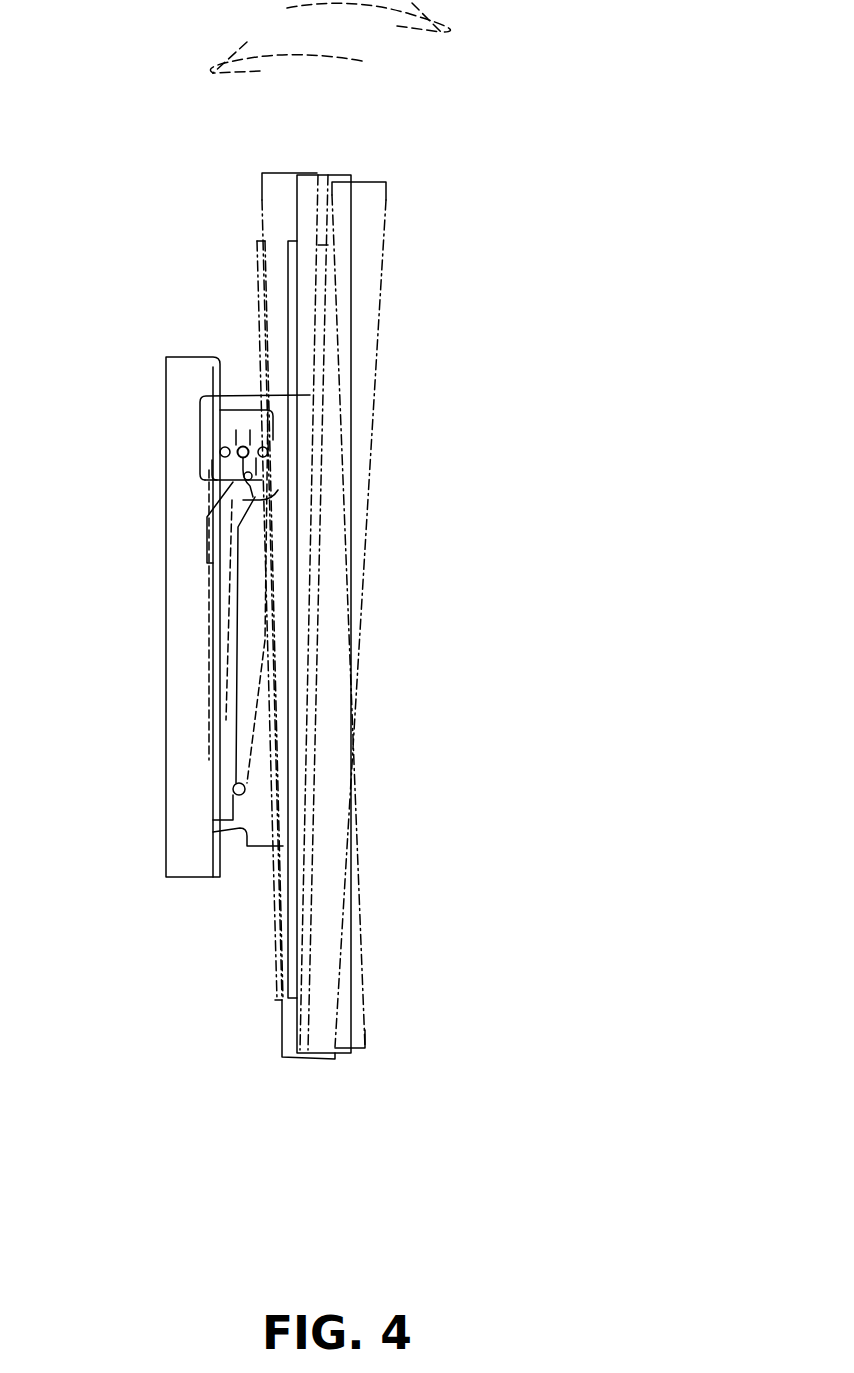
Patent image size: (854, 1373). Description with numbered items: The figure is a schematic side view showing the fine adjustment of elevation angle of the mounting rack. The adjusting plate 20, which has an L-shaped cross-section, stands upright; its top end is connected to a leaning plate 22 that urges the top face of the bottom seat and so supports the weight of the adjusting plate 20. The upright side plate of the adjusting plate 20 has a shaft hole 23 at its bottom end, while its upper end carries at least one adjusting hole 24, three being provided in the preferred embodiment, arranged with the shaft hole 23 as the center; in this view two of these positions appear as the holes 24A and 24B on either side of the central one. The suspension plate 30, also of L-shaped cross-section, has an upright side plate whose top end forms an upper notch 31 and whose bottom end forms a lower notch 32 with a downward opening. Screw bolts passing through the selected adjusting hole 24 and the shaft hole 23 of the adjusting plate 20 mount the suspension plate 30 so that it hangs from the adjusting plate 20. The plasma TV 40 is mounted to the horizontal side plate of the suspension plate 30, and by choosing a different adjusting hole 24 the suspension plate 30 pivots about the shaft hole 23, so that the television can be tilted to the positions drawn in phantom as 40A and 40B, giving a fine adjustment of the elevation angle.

The adjusting plate 20 is at (216, 570).
The leaning plate 22 is at (183, 357).
The shaft hole 23 is at (246, 789).
The adjusting hole 24 is at (247, 395).
The left pivot of hinge bracket 24A is at (220, 452).
The right pivot of hinge bracket 24B is at (268, 452).
The suspension plate 30 is at (265, 652).
The upper notch 31 is at (253, 497).
The lower notch 32 is at (243, 850).
The plasma TV 40 is at (324, 180).
The panel in first swung position 40A is at (262, 200).
The panel in second swung position 40B is at (377, 207).